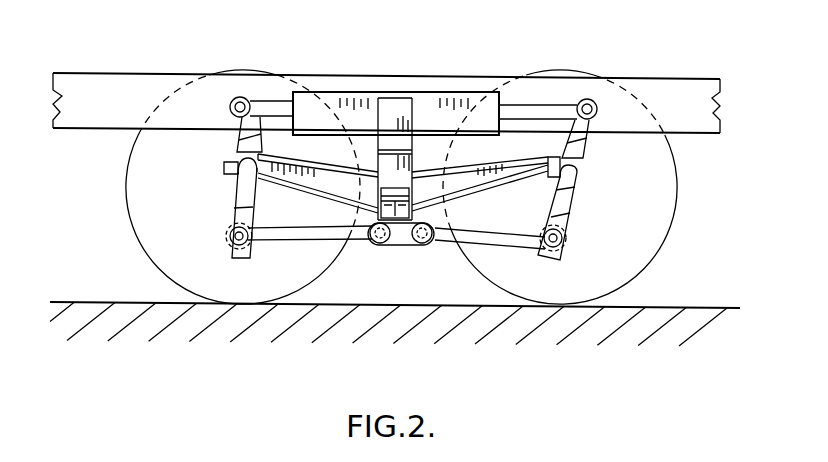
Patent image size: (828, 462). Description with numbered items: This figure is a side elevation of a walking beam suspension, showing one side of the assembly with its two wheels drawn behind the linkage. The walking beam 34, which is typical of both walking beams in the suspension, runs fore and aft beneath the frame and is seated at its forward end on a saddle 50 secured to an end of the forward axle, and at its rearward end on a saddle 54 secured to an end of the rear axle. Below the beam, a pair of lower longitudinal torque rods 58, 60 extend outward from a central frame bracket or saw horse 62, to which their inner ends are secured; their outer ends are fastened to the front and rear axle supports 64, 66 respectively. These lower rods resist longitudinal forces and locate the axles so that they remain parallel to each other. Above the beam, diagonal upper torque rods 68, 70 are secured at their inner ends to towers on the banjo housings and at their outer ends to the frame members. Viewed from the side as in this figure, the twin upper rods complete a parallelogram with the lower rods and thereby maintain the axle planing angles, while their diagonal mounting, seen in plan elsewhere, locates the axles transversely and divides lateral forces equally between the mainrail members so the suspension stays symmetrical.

The walking beam 34 is at (500, 181).
The saddle 50 is at (240, 171).
The saddle 54 is at (579, 178).
The lower longitudinal torque rod 58 is at (283, 238).
The lower longitudinal torque rod 60 is at (478, 244).
The frame bracket 62 is at (398, 245).
The front axle support 64 is at (230, 257).
The rear axle support 66 is at (556, 257).
The diagonal upper torque rod 68 is at (268, 100).
The diagonal upper torque rod 70 is at (538, 108).